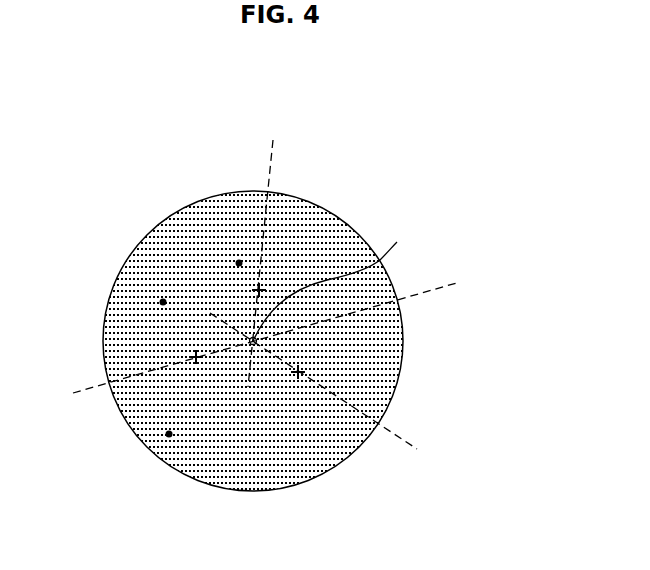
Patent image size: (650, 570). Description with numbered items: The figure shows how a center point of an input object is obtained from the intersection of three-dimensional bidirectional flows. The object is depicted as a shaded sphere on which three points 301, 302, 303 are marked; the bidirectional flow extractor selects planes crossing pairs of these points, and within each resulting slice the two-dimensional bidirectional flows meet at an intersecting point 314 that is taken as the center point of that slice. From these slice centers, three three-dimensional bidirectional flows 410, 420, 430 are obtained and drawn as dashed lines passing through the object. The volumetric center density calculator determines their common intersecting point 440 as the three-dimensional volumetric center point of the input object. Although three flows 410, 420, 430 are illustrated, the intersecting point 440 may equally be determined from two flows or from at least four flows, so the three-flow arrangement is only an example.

The point 301 is at (239, 263).
The point 302 is at (163, 302).
The point 303 is at (169, 434).
The intersecting point 314 is at (298, 372).
The 3D bidirectional flow 410 is at (397, 437).
The 3D bidirectional flow 420 is at (432, 292).
The 3D bidirectional flow 430 is at (272, 163).
The intersecting point 440 is at (347, 281).